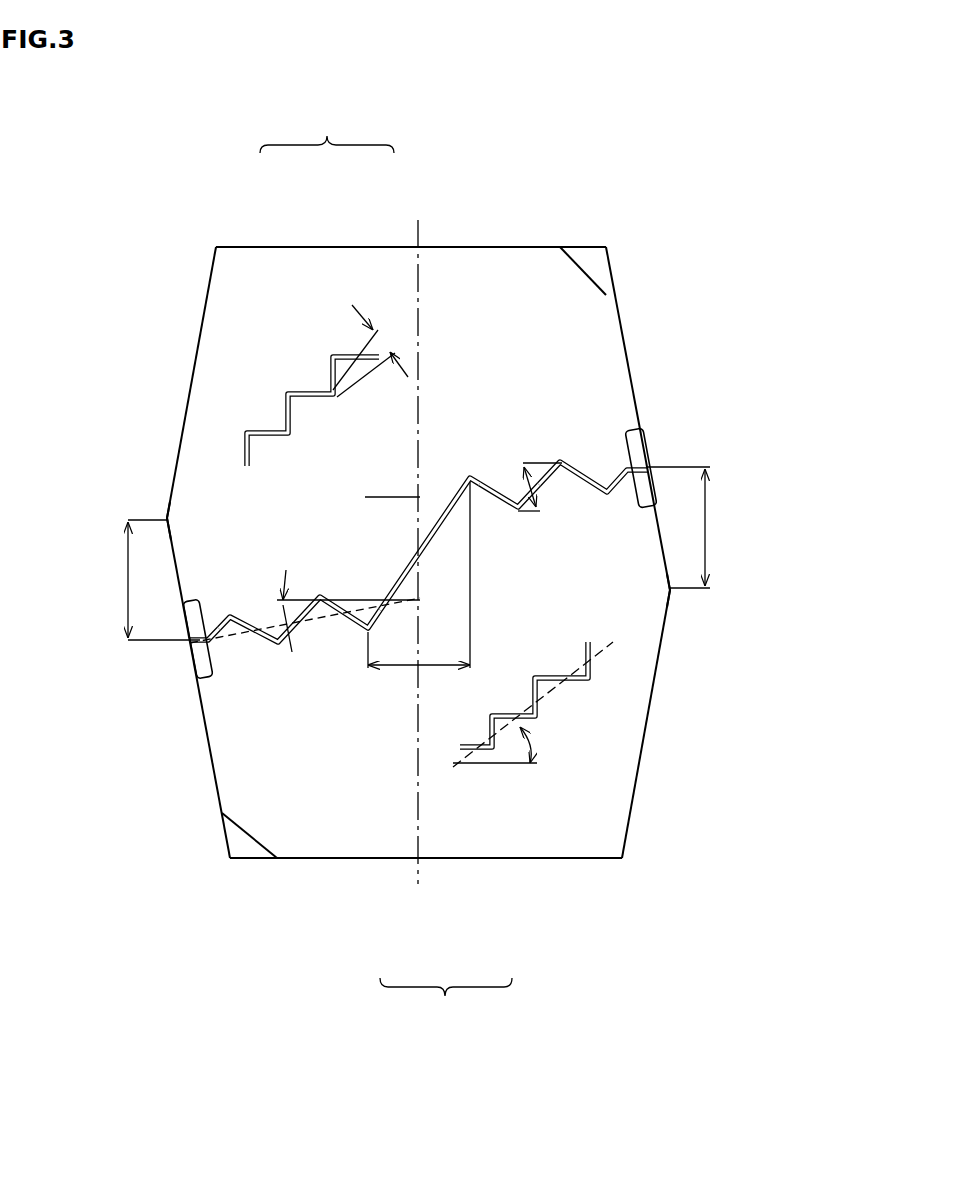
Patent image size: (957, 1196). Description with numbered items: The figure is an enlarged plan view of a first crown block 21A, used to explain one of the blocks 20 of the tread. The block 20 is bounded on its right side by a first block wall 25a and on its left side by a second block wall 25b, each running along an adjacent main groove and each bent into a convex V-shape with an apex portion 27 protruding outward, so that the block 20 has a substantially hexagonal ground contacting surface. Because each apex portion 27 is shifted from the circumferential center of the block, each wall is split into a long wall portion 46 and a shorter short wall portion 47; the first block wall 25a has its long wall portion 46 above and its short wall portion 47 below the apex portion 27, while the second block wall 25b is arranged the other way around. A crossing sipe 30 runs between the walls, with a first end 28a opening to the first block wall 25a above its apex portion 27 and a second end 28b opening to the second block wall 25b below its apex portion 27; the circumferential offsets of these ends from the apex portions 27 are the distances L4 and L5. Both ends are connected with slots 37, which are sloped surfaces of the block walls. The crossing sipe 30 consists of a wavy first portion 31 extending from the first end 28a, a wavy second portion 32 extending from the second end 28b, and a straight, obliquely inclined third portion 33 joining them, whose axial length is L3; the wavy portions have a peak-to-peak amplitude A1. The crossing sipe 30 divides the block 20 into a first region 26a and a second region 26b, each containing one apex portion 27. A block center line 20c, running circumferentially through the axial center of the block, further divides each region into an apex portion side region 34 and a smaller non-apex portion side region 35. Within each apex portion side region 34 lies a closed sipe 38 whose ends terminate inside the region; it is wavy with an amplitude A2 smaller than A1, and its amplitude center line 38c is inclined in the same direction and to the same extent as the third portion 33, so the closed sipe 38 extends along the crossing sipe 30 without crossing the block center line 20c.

The block 20 is at (412, 567).
The first crown block 21A is at (412, 567).
The block center line 20c is at (437, 792).
The first block wall 25a is at (633, 378).
The second block wall 25b is at (135, 688).
The long wall portion 46 is at (210, 760).
The first region 26a is at (426, 944).
The second region 26b is at (411, 175).
The apex portion 27 is at (167, 518).
The first end 28a is at (648, 468).
The second end 28b is at (195, 640).
The crossing sipe 30 is at (490, 485).
The first portion 31 is at (583, 481).
The second portion 32 is at (266, 650).
The third portion 33 is at (395, 587).
The apex portion side region 34 is at (302, 330).
The non-apex portion side region 35 is at (470, 325).
The slot 37 is at (198, 660).
The closed sipe 38 is at (293, 390).
The center line of closed sipe amplitude 38c is at (560, 690).
The short wall portion 47 is at (200, 333).
The length of third portion L3 is at (385, 660).
The distance between apex portion and first end L4 is at (692, 527).
The distance between apex portion and second end L5 is at (145, 580).
The peak-to-peak amplitude amount of first and second portions A1 is at (522, 500).
The peak-to-peak amplitude amount of closed sipe A2 is at (370, 330).